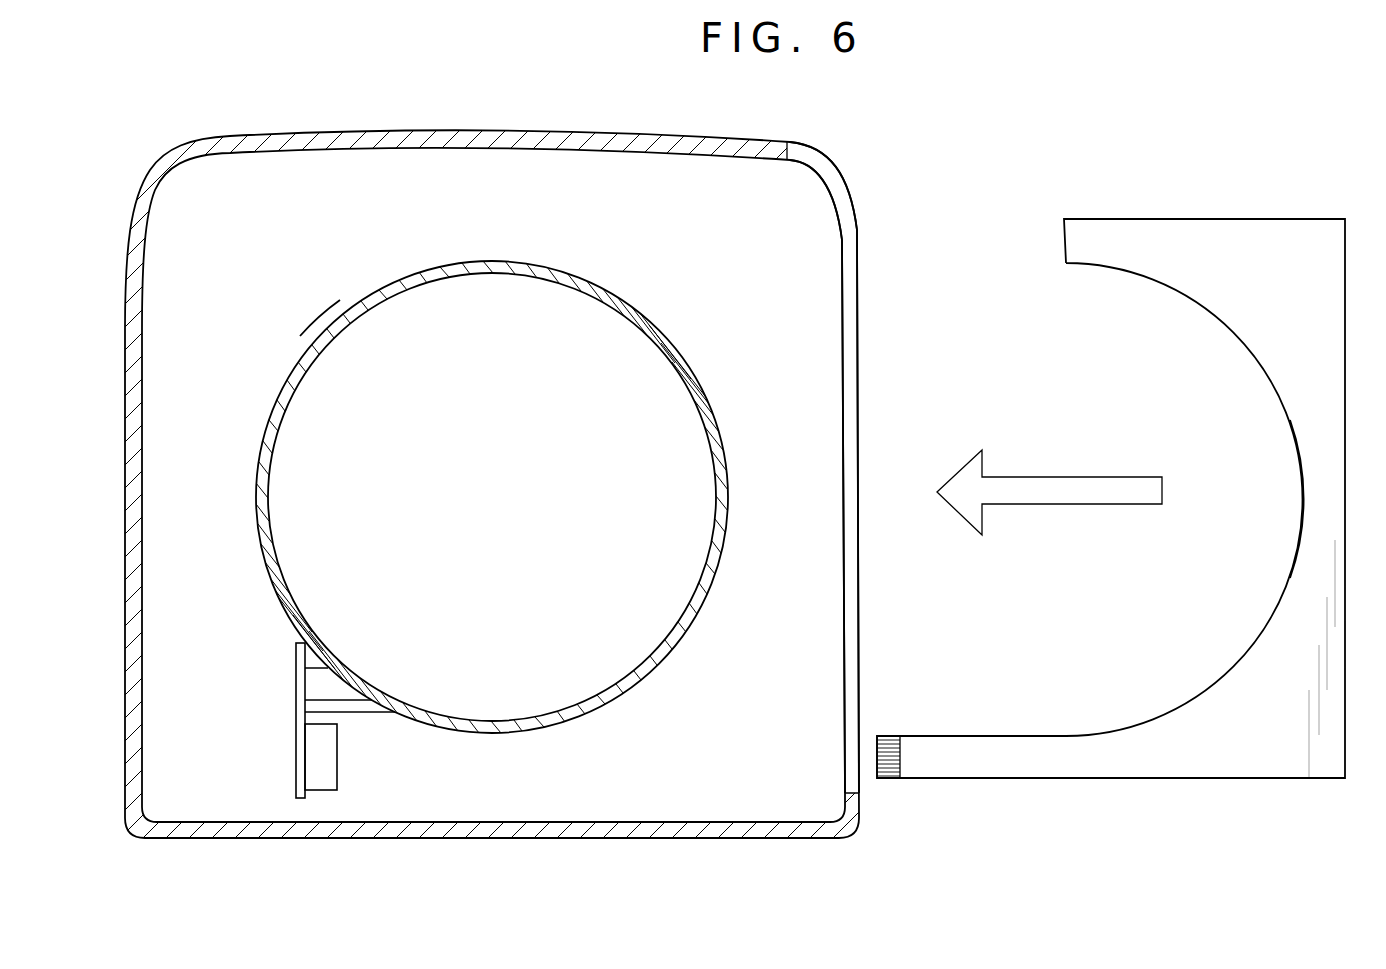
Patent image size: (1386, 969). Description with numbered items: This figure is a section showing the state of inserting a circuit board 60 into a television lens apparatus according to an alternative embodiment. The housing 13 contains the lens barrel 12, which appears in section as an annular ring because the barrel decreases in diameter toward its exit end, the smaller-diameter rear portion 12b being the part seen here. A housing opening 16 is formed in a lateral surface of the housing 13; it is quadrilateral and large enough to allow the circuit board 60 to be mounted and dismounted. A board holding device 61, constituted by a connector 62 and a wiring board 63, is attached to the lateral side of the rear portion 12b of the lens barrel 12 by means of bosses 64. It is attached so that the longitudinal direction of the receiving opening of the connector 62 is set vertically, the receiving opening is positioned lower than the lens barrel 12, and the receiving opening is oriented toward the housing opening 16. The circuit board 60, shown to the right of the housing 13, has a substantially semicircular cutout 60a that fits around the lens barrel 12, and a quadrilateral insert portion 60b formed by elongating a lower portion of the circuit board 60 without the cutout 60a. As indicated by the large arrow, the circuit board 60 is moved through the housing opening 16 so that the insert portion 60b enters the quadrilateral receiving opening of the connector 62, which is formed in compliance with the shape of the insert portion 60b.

The housing 13 is at (660, 143).
The housing opening 16 is at (852, 611).
The lens barrel 12 is at (422, 271).
The rear portion 12b is at (363, 298).
The board holding device 61 is at (307, 704).
The connector 62 is at (329, 757).
The wiring board 63 is at (298, 683).
The bosses 64 is at (337, 706).
The circuit board 60 is at (1111, 507).
The cutout 60a is at (1300, 498).
The insert portion 60b is at (890, 766).